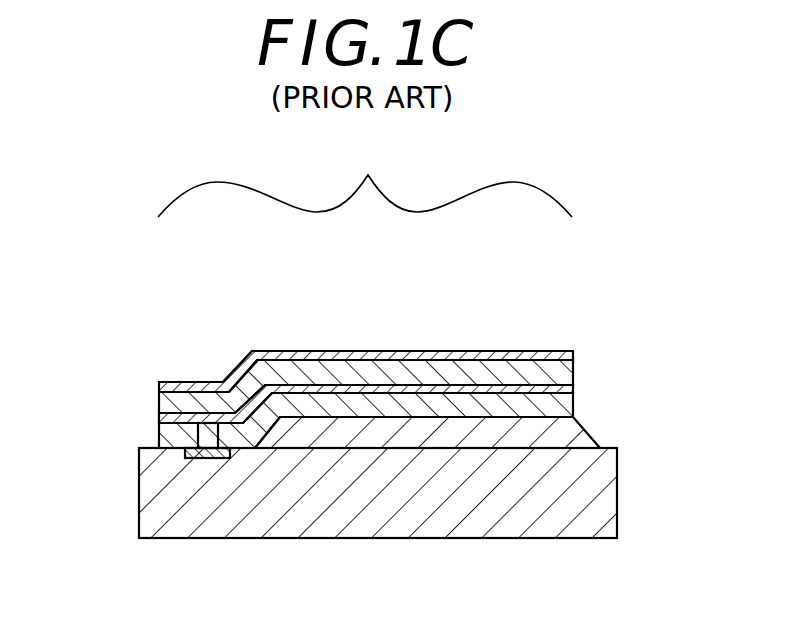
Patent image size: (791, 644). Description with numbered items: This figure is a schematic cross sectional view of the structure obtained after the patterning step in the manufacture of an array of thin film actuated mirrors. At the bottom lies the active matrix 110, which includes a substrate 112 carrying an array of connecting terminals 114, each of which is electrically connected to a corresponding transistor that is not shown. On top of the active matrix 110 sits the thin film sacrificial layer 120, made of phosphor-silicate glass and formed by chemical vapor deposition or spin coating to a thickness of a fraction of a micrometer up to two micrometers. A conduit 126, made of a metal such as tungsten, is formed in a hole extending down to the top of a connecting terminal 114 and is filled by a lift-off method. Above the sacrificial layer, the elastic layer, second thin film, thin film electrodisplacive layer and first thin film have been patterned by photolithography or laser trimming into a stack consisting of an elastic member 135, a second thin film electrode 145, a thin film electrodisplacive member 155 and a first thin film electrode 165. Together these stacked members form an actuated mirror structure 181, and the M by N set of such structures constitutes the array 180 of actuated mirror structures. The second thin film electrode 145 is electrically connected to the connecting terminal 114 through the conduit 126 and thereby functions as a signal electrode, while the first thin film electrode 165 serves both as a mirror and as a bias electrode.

The active matrix 110 is at (637, 450).
The substrate 112 is at (355, 539).
The connecting terminal 114 is at (193, 458).
The thin film sacrificial layer 120 is at (576, 441).
The conduit 126 is at (210, 439).
The elastic member 135 is at (492, 395).
The second thin film electrode 145 is at (356, 385).
The thin film electrodisplacive member 155 is at (427, 357).
The first thin film electrode 165 is at (281, 357).
The array of actuated mirror structures 180 is at (558, 143).
The actuated mirror structure 181 is at (365, 178).